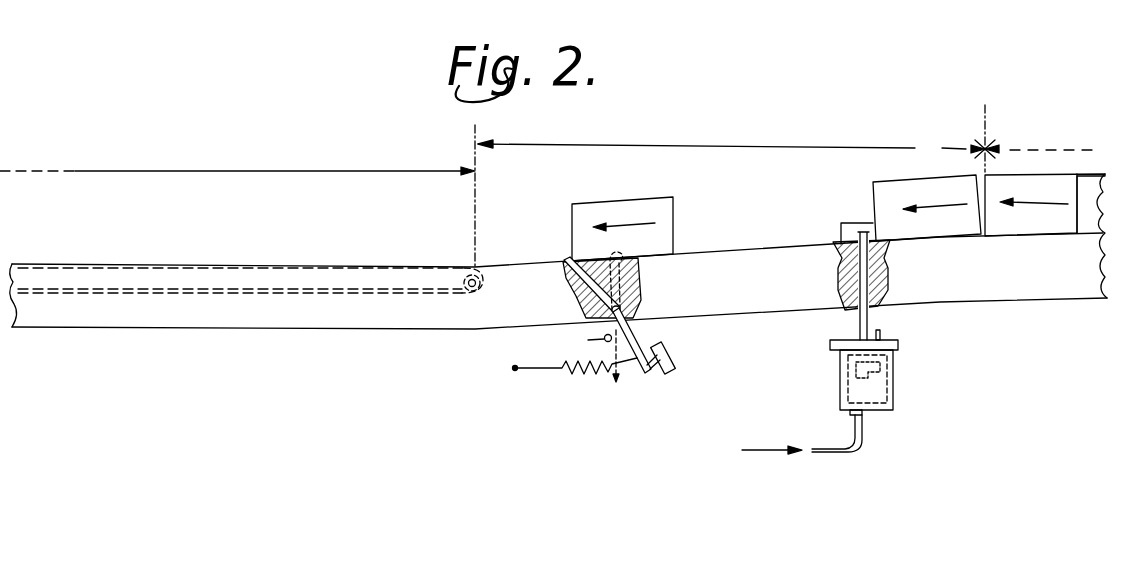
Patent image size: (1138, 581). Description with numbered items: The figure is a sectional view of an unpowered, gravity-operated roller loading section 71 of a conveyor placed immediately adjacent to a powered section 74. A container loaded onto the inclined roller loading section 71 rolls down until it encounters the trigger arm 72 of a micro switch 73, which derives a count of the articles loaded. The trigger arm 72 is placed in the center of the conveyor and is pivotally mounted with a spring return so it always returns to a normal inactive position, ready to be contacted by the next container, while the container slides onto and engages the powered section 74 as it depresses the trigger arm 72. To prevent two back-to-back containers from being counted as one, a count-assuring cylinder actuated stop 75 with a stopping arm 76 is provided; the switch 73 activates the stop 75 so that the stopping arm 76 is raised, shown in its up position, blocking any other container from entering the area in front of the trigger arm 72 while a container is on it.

The roller loading section 71 is at (791, 193).
The trigger arm 72 is at (588, 262).
The micro switch 73 is at (670, 375).
The powered section 74 is at (237, 162).
The cylinder actuated stop 75 is at (898, 397).
The stopping arm 76 is at (859, 326).